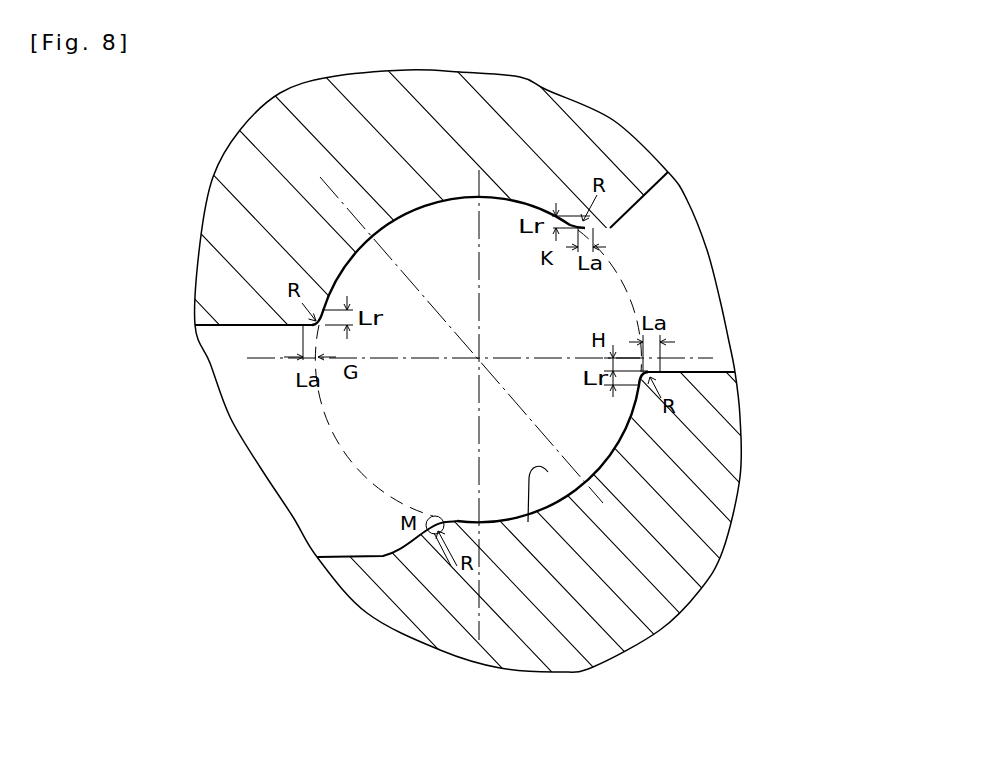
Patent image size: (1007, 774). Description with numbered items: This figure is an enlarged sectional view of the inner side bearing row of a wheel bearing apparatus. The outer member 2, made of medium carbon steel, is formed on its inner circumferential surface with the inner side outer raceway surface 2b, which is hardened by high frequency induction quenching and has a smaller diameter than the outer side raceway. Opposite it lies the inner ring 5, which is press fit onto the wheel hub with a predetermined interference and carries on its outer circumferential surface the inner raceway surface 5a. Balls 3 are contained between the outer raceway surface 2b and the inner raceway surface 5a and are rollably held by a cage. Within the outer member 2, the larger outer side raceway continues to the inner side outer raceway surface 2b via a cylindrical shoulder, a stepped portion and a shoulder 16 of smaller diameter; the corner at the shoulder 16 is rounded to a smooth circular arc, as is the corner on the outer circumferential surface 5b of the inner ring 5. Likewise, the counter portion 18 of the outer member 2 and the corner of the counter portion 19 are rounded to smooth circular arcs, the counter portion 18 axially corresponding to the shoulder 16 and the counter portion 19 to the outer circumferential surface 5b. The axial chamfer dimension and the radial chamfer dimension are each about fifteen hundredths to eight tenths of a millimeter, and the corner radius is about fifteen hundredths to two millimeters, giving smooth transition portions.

The outer member 2 is at (342, 128).
The inner side outer raceway surface 2b is at (417, 212).
The balls 3 is at (590, 289).
The inner ring 5 is at (642, 487).
The inner raceway surface 5a is at (655, 613).
The outer circumferential surface 5b is at (713, 372).
The shoulder 16 is at (237, 327).
The counter portion 18 is at (613, 230).
The counter portion 19 is at (457, 520).